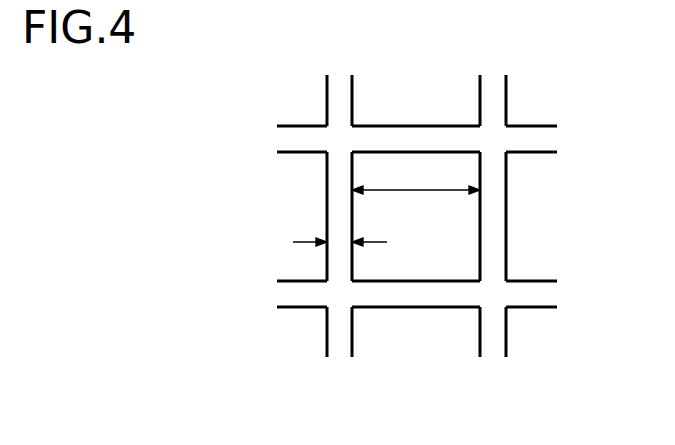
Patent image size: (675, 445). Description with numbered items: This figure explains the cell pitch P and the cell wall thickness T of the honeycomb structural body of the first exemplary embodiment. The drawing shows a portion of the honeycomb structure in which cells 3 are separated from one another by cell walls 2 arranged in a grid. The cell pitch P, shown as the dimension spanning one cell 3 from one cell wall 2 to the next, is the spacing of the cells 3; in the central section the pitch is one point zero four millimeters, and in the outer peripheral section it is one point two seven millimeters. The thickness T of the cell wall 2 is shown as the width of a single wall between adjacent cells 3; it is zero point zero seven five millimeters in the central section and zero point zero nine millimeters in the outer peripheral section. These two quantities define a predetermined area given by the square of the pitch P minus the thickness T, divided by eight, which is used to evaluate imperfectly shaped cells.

The cell wall 2 is at (423, 295).
The cell 3 is at (458, 255).
The cell pitch P is at (400, 187).
The thickness of the cell wall T is at (340, 242).